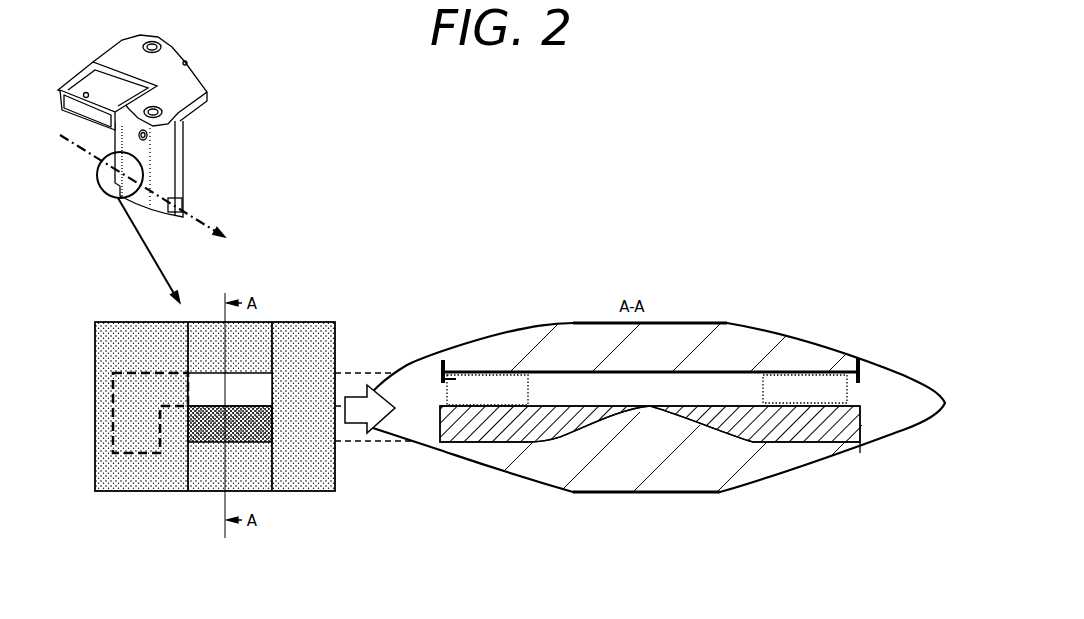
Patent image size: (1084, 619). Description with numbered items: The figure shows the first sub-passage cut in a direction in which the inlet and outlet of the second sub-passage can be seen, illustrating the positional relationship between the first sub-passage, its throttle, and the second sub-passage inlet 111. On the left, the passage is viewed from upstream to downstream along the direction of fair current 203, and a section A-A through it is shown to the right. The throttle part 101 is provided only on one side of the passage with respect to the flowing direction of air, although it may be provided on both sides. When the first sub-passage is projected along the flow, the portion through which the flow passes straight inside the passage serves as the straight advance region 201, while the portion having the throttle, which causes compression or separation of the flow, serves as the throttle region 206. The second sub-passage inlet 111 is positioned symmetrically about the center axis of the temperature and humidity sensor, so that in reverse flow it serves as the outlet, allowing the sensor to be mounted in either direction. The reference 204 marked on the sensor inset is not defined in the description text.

The throttle part 101 is at (215, 450).
The second sub-passage inlet 111 is at (466, 388).
The straight advance region 201 is at (545, 294).
The direction of fair current 203 is at (341, 482).
The insertion axis 204 is at (194, 181).
The throttle region 206 is at (664, 490).